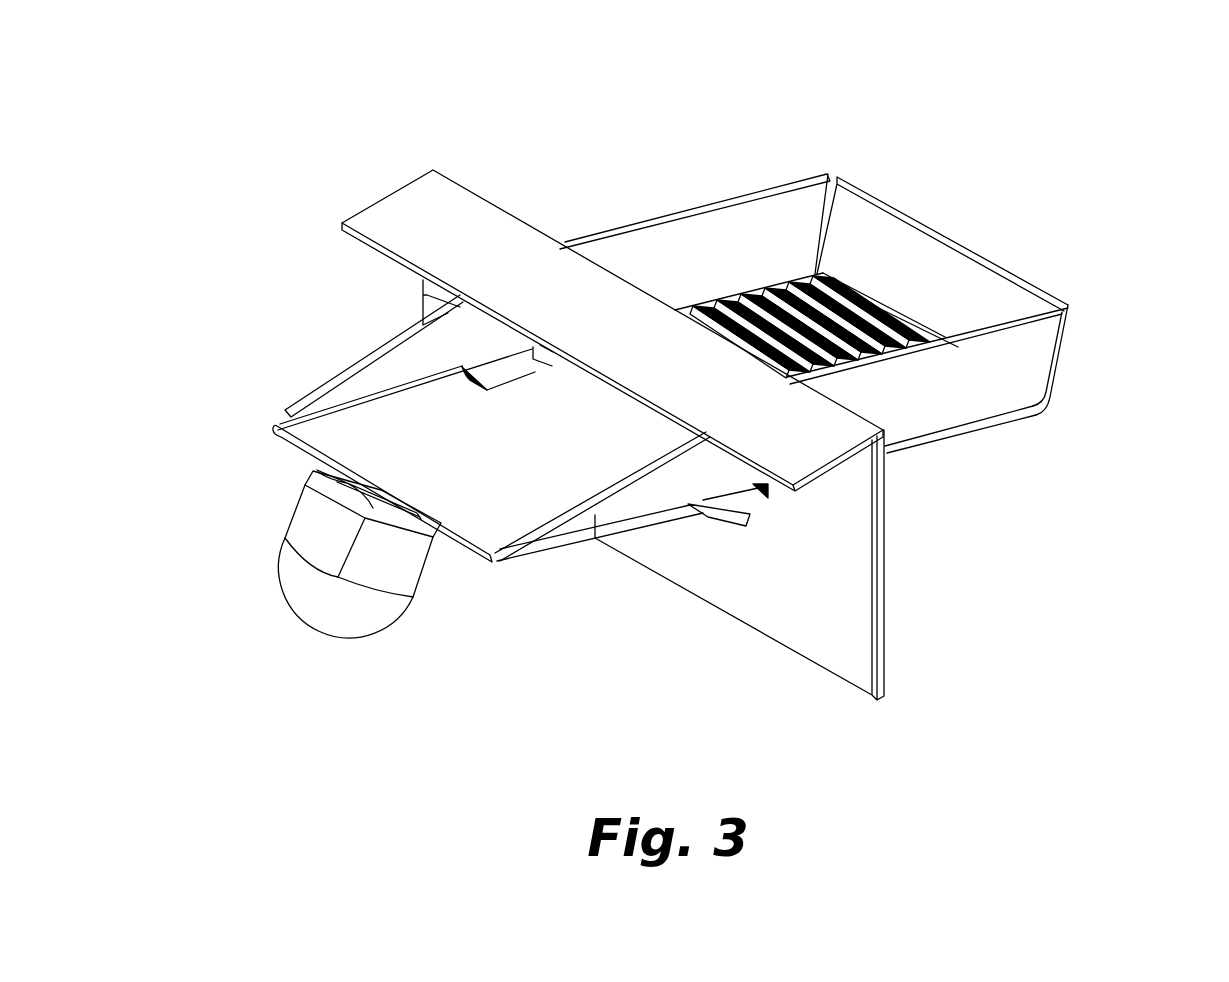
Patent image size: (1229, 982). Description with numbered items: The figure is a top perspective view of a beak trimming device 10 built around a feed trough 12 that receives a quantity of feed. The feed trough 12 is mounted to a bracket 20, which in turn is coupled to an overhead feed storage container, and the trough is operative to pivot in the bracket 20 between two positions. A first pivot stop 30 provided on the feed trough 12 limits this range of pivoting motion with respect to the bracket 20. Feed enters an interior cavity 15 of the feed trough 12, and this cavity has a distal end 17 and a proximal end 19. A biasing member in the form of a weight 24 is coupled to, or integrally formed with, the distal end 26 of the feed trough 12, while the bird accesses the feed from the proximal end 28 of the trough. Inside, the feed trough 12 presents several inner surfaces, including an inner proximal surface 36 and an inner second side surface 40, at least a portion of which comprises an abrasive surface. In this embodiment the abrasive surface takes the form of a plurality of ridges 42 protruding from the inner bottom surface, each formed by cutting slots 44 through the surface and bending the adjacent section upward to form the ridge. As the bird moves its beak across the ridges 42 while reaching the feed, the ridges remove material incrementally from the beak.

The beak trimming device 10 is at (1092, 80).
The feed trough 12 is at (901, 458).
The interior cavity 15 is at (805, 203).
The distal end 17 is at (645, 272).
The proximal end 19 is at (952, 281).
The bracket 20 is at (368, 248).
The weight 24 is at (333, 637).
The distal end 26 is at (283, 540).
The proximal end 28 is at (1102, 324).
The first pivot stop 30 is at (717, 518).
The inner proximal surface 36 is at (918, 240).
The inner second side surface 40 is at (742, 253).
The ridges 42 is at (787, 310).
The slots 44 is at (945, 468).